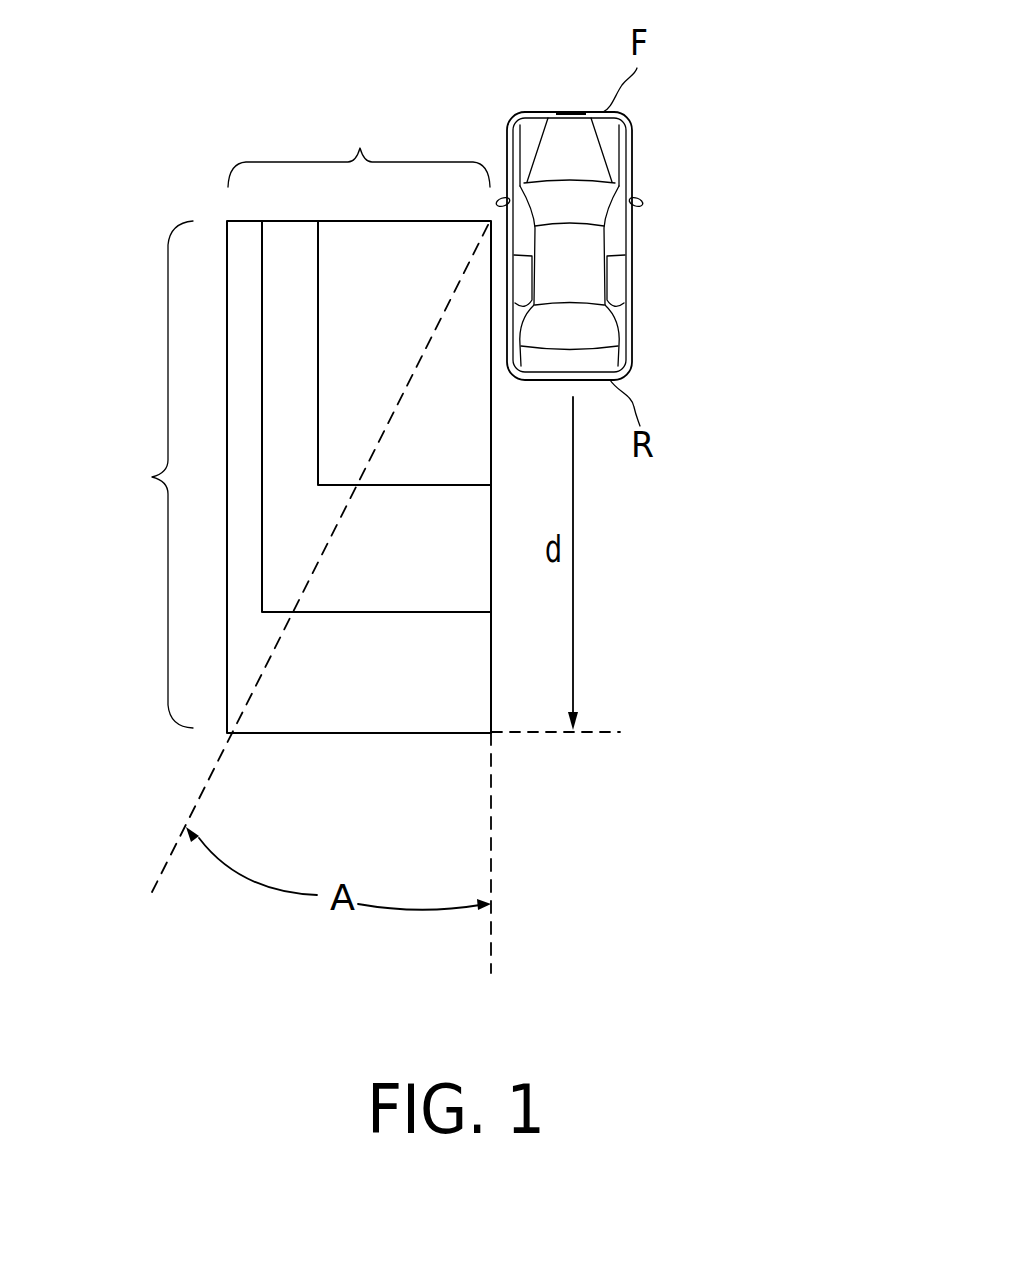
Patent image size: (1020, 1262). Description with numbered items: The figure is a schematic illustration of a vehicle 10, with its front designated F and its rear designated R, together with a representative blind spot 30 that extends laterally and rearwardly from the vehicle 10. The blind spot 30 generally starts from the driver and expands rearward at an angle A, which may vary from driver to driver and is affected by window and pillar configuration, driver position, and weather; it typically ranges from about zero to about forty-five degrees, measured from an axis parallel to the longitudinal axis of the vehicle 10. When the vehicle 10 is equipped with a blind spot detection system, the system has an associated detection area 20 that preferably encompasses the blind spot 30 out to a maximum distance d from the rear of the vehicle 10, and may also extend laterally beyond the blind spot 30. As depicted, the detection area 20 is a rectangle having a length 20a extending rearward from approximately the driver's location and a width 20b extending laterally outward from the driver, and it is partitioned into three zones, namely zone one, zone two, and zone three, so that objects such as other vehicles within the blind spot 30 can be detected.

The vehicle 10 is at (800, 133).
The detection area 20 is at (227, 448).
The length 20a is at (143, 474).
The width 20b is at (359, 144).
The blind spot 30 is at (170, 855).